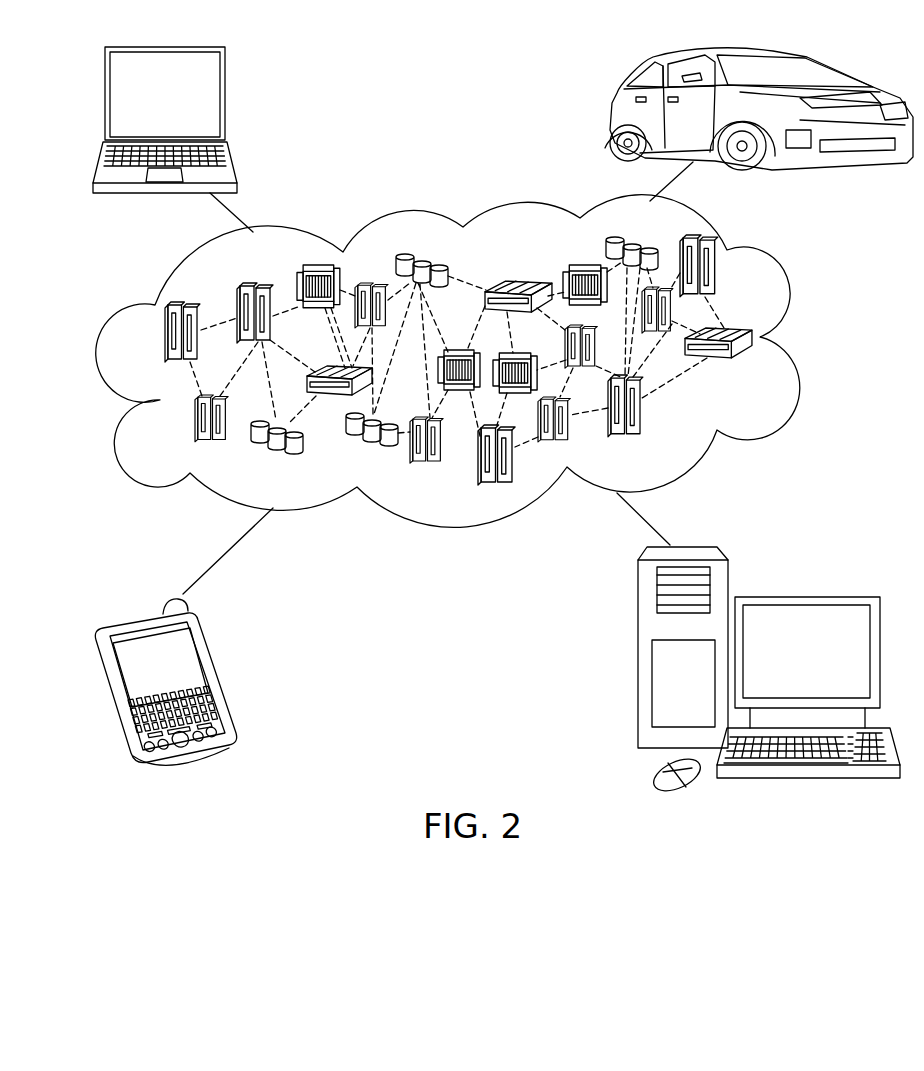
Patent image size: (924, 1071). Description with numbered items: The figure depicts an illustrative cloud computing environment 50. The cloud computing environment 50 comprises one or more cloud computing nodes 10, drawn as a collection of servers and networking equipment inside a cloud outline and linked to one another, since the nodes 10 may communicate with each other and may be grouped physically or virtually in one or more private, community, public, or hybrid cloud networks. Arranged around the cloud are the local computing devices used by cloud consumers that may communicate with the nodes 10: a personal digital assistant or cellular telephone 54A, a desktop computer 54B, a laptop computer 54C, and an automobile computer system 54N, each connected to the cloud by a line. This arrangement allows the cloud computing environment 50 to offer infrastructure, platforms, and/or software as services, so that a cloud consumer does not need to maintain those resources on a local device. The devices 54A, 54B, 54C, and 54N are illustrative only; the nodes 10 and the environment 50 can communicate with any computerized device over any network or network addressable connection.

The cloud computing nodes 10 is at (752, 368).
The cloud computing environment 50 is at (803, 340).
The personal digital assistant or cellular telephone 54A is at (218, 680).
The desktop computer 54B is at (803, 596).
The laptop computer 54C is at (225, 100).
The automobile computer system 54N is at (610, 112).